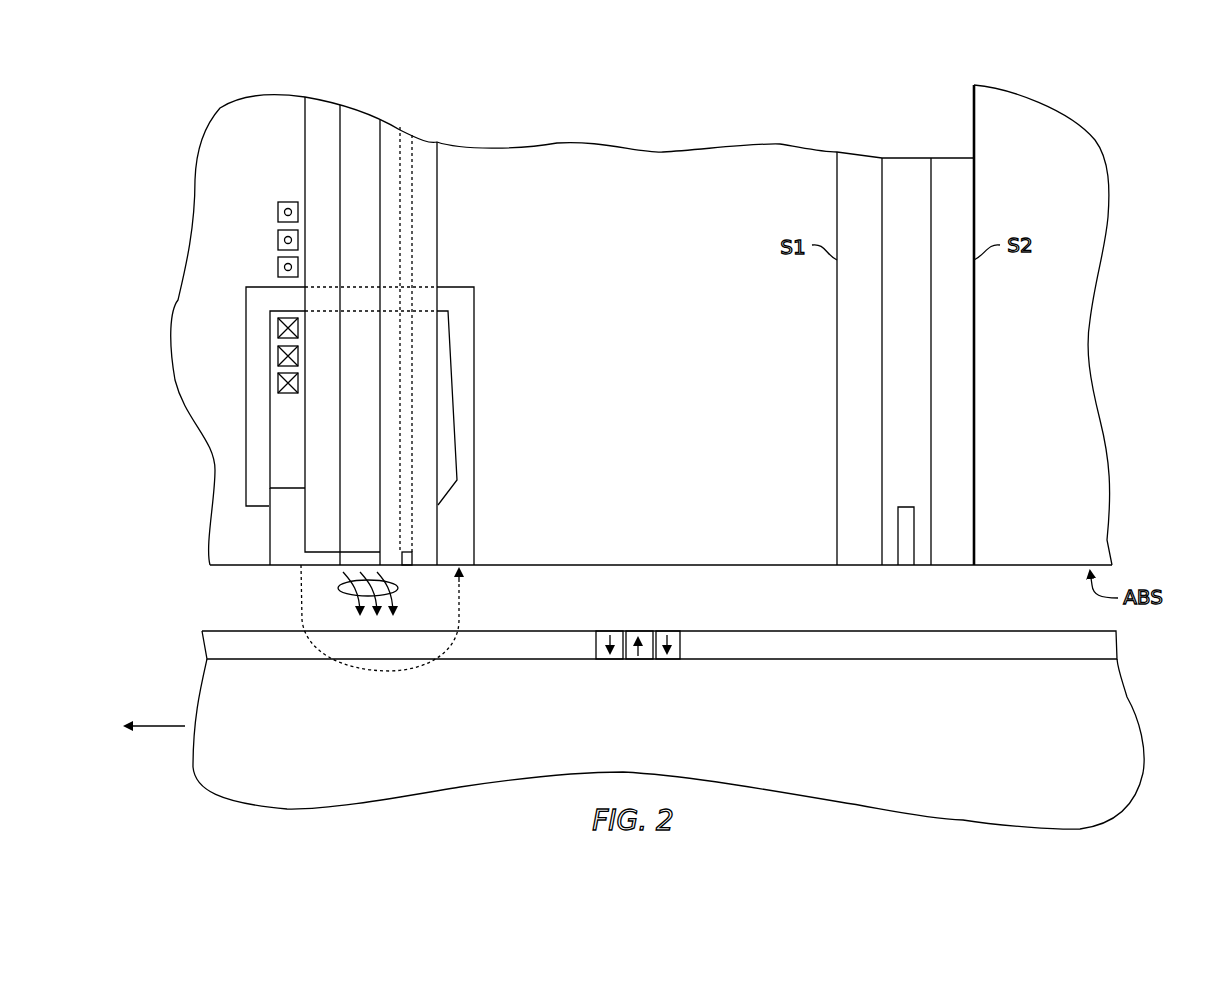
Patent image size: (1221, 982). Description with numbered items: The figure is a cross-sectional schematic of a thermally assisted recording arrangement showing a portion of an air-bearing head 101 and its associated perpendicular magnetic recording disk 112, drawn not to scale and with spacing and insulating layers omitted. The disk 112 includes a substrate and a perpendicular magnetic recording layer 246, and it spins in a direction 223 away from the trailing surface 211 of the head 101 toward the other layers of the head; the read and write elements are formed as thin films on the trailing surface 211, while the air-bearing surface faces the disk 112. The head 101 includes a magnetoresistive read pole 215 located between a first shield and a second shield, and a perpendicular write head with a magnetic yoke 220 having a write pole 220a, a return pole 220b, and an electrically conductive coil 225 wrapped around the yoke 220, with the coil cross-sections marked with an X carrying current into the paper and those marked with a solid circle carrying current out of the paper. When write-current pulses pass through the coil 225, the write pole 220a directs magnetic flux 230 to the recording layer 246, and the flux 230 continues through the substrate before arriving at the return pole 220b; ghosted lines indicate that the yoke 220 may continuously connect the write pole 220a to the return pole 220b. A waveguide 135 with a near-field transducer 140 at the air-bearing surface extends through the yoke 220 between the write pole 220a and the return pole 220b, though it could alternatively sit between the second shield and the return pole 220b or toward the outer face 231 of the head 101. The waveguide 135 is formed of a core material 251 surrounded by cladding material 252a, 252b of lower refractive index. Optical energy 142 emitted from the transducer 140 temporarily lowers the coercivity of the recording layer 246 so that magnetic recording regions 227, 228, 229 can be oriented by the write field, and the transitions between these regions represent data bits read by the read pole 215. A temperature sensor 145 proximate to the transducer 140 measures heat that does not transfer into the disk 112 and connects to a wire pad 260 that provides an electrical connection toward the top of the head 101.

The air-bearing head 101 is at (209, 126).
The perpendicular magnetic recording disk 112 is at (1145, 725).
The waveguide 135 is at (306, 70).
The near-field transducer 140 is at (347, 556).
The optical energy 142 is at (398, 590).
The temperature sensor 145 is at (413, 558).
The trailing surface 211 is at (970, 118).
The magnetoresistive read pole 215 is at (906, 518).
The magnetic yoke 220 is at (247, 293).
The write pole 220a is at (270, 533).
The return pole 220b is at (475, 537).
The direction 223 is at (165, 728).
The electrically conductive coil 225 is at (272, 203).
The magnetic recording region 227 is at (642, 662).
The magnetic recording region 228 is at (605, 662).
The magnetic recording region 229 is at (673, 662).
The magnetic flux 230 is at (393, 673).
The outer face 231 is at (187, 413).
The perpendicular magnetic recording layer 246 is at (207, 647).
The core material 251 is at (346, 342).
The cladding material 252a is at (323, 98).
The cladding material 252b is at (390, 122).
The wire pad 260 is at (410, 122).